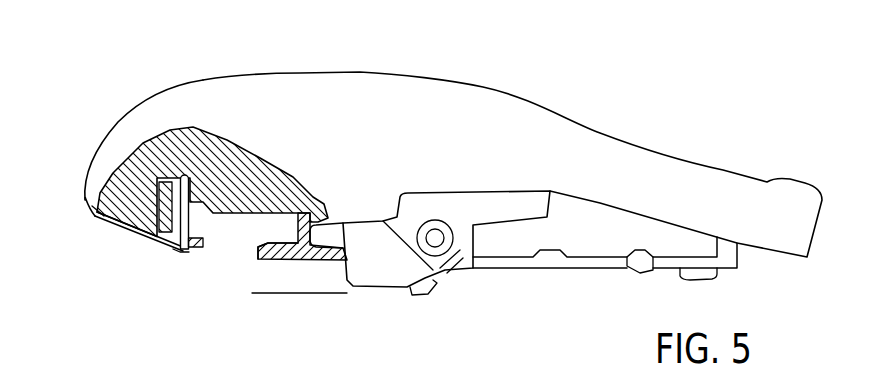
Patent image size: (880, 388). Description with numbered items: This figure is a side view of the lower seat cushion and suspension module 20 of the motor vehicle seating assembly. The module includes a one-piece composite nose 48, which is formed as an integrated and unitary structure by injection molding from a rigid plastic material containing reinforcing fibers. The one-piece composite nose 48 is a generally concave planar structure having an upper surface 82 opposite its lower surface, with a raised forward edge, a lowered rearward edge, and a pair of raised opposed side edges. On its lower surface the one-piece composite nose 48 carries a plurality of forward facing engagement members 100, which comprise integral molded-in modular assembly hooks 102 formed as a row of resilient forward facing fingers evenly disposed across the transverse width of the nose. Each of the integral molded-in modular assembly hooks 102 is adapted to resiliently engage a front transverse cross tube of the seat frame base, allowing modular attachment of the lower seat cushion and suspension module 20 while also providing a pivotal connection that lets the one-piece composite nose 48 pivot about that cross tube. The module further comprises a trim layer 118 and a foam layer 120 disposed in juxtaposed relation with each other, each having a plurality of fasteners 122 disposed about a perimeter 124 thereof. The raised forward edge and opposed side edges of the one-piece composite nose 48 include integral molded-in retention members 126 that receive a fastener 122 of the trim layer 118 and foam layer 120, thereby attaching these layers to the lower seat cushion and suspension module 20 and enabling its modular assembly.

The lower seat cushion and suspension module 20 is at (712, 105).
The one-piece composite nose 48 is at (317, 185).
The upper surface 82 is at (207, 190).
The forward facing engagement members 100 is at (312, 258).
The integral molded-in modular assembly hooks 102 is at (273, 258).
The trim layer 118 is at (132, 243).
The foam layer 120 is at (90, 217).
The fastener 122 is at (185, 253).
The perimeter 124 is at (199, 247).
The integral molded-in retention members 126 is at (140, 127).